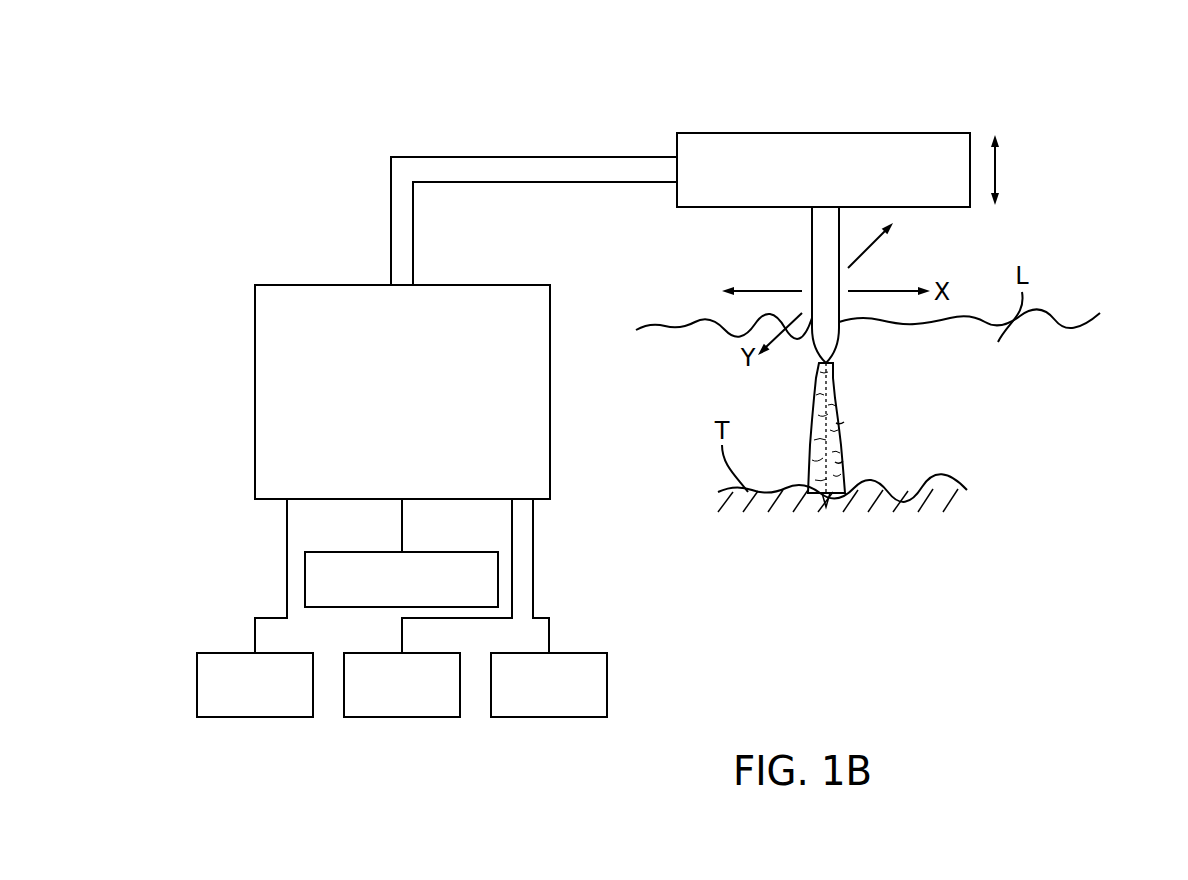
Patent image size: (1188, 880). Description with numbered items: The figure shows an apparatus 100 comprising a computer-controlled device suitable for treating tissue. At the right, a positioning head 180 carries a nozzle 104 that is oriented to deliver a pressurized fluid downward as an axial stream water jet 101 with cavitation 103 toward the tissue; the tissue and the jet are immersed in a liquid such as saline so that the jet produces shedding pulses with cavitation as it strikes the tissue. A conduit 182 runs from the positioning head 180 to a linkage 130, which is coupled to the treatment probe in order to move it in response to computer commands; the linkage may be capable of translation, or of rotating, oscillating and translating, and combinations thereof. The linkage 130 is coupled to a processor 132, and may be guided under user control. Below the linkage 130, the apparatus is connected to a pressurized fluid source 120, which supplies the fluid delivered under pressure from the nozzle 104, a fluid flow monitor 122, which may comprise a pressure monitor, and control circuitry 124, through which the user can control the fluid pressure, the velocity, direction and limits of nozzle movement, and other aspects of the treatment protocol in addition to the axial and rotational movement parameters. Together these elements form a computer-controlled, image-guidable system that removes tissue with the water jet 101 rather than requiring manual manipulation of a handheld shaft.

The apparatus 100 is at (436, 102).
The gantry / positioning head 180 is at (966, 62).
The supply conduit 182 is at (552, 157).
The linkage 130 is at (335, 284).
The processor 132 is at (303, 582).
The pressurized fluid source 120 is at (240, 719).
The fluid flow monitor 122 is at (401, 719).
The control circuitry 124 is at (546, 719).
The nozzle 104 is at (826, 349).
The water jet 101 is at (833, 405).
The cavitation 103 is at (837, 465).